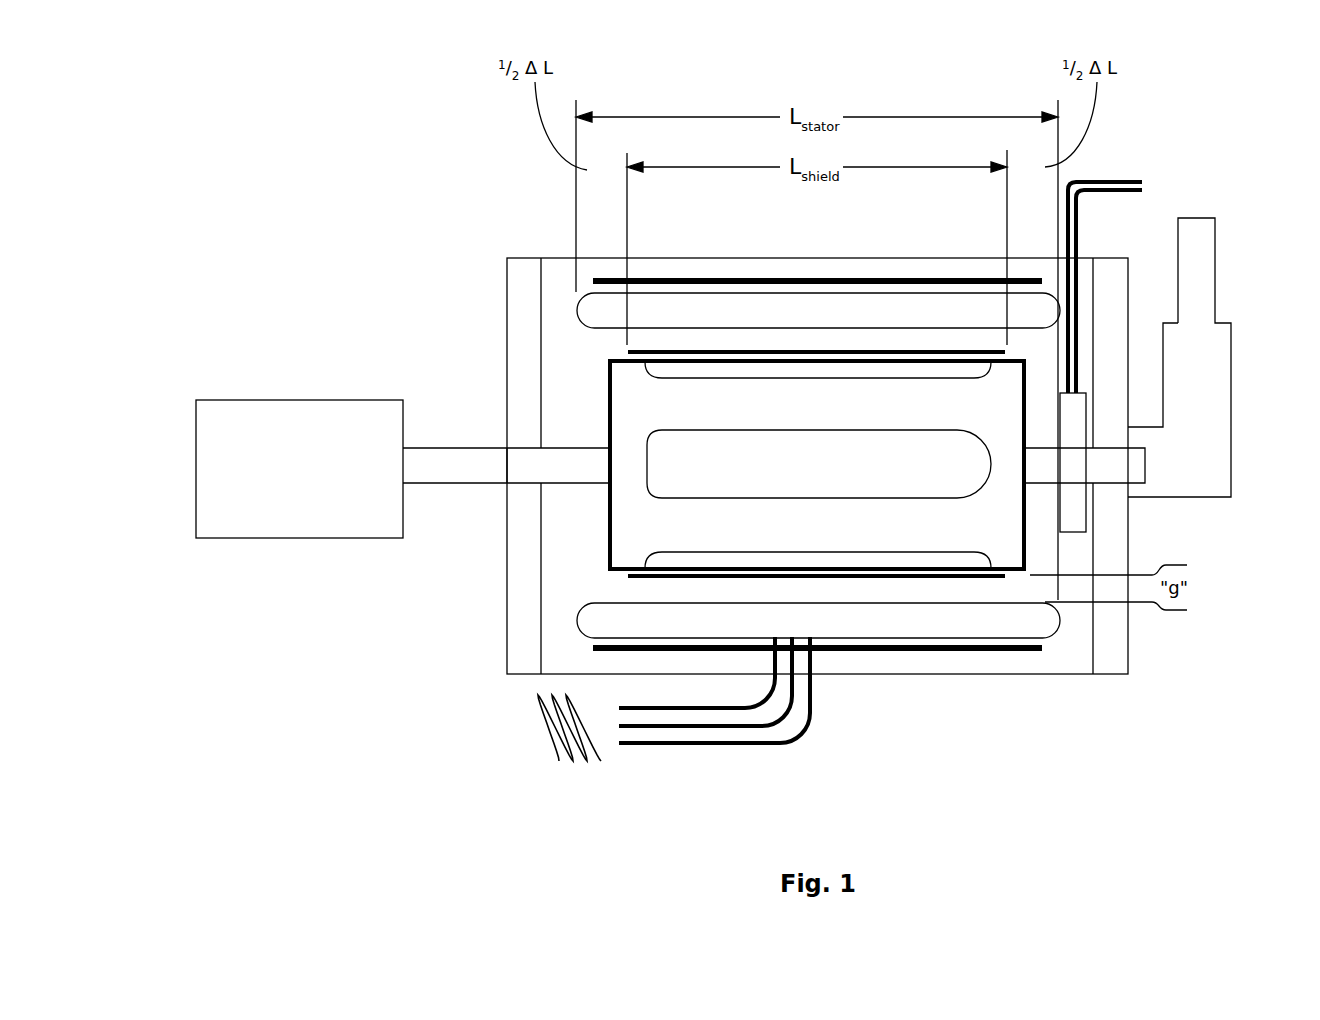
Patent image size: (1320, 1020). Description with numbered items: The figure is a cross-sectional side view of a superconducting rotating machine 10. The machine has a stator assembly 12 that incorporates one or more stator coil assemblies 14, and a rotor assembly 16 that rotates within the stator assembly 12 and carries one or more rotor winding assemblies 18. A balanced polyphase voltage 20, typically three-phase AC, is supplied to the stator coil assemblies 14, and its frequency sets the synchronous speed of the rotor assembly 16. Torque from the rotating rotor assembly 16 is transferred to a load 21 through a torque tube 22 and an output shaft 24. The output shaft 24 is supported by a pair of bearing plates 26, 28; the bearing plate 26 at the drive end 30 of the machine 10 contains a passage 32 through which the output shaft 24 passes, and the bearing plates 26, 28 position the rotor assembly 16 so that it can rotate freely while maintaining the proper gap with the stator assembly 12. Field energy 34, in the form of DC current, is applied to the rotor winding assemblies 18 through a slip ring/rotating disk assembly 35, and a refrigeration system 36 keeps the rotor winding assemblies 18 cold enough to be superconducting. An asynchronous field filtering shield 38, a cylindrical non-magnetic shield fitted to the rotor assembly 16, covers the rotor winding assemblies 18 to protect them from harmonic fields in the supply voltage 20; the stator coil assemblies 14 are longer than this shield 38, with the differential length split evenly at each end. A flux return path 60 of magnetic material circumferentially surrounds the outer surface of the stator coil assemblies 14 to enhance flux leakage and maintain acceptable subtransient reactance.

The superconducting rotating machine 10 is at (258, 131).
The stator assembly 12 is at (697, 268).
The stator coil assembly 14 is at (888, 308).
The rotor assembly 16 is at (901, 525).
The rotor winding assembly 18 is at (836, 473).
The balanced polyphase voltage 20 is at (515, 727).
The load 21 is at (342, 398).
The torque tube 22 is at (606, 382).
The output shaft 24 is at (485, 448).
The bearing plate 26 is at (507, 626).
The bearing plate 28 is at (1130, 548).
The drive end 30 is at (466, 222).
The passage 32 is at (527, 467).
The field energy 34 is at (1158, 168).
The slip ring/rotating disk assembly 35 is at (1073, 533).
The refrigeration system 36 is at (1235, 377).
The asynchronous field filtering shield 38 is at (987, 580).
The flux return path 60 is at (835, 282).